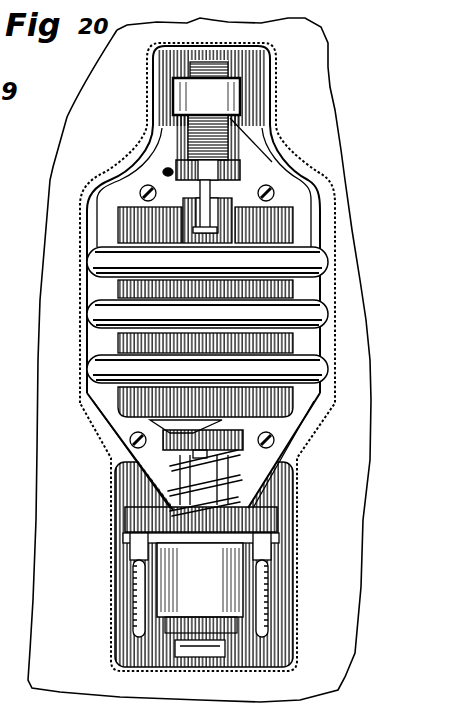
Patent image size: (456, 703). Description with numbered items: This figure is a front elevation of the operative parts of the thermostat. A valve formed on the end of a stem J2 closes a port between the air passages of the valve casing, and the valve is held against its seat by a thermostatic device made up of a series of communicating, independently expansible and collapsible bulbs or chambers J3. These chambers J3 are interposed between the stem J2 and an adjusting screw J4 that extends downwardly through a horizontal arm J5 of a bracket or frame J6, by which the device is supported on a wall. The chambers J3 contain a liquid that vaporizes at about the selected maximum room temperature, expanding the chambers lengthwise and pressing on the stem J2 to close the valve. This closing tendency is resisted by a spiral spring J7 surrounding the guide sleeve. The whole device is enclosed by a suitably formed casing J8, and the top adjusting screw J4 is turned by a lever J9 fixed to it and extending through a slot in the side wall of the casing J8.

The stem J2 is at (100, 471).
The expansible and collapsible bulbs or chambers J3 is at (75, 303).
The adjusting screw J4 is at (147, 138).
The horizontal arm J5 is at (187, 88).
The bracket or frame J6 is at (245, 160).
The spring J7 is at (133, 552).
The casing J8 is at (303, 167).
The lever J9 is at (165, 171).